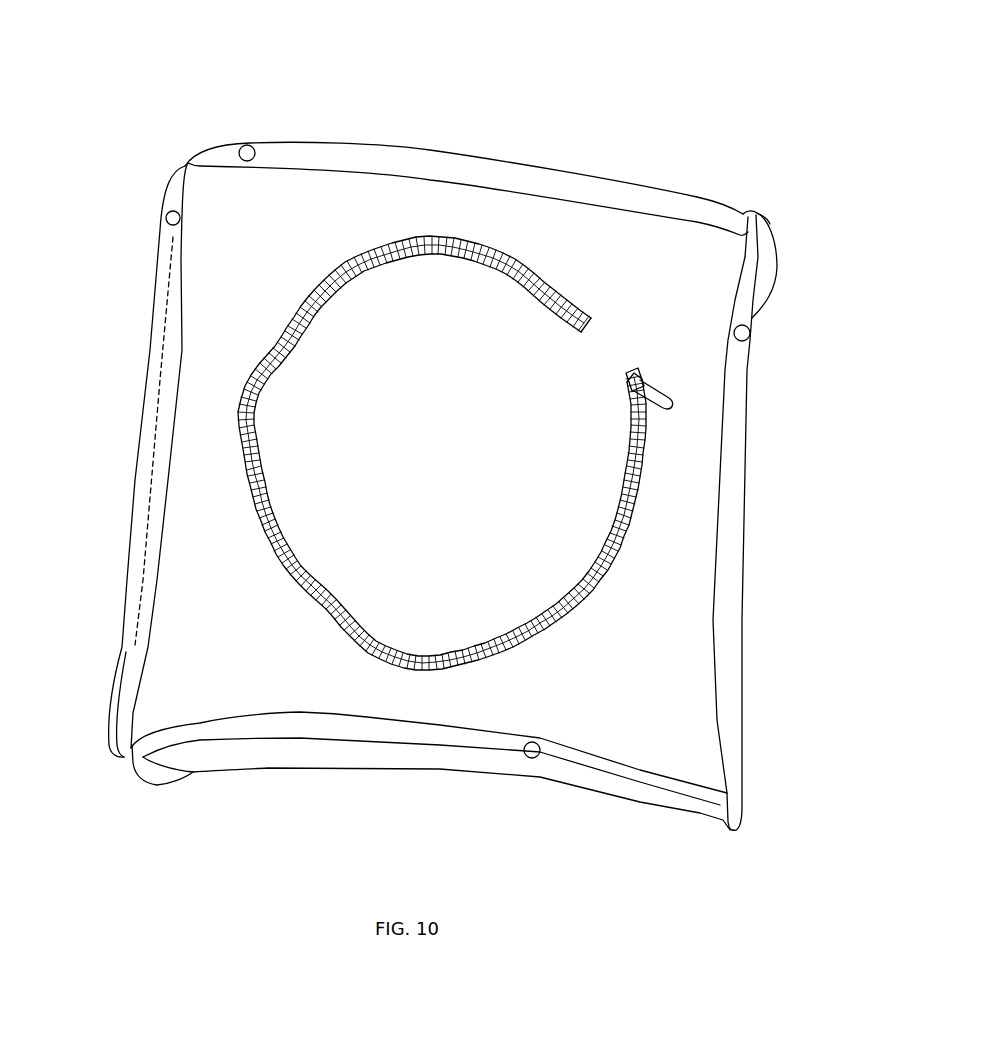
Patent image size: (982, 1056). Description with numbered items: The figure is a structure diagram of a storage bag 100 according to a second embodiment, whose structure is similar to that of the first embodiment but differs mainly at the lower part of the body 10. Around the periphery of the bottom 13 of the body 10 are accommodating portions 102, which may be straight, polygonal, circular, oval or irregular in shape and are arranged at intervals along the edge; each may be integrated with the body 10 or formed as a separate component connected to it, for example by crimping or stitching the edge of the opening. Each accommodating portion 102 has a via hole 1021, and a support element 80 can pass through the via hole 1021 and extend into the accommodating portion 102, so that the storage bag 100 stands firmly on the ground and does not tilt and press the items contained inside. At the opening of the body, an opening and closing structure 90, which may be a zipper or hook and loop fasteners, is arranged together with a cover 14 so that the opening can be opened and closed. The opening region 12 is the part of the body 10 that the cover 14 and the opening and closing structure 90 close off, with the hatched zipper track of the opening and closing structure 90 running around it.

The storage bag 100 is at (505, 161).
The body 10 is at (355, 219).
The accommodating portion 102 is at (283, 150).
The via hole 1021 is at (173, 217).
The opening (zipper track) 12 is at (588, 311).
The cover 14 is at (432, 396).
The opening and closing structure 90 is at (240, 400).
The support element 80 is at (140, 556).
The bottom 13 is at (255, 670).